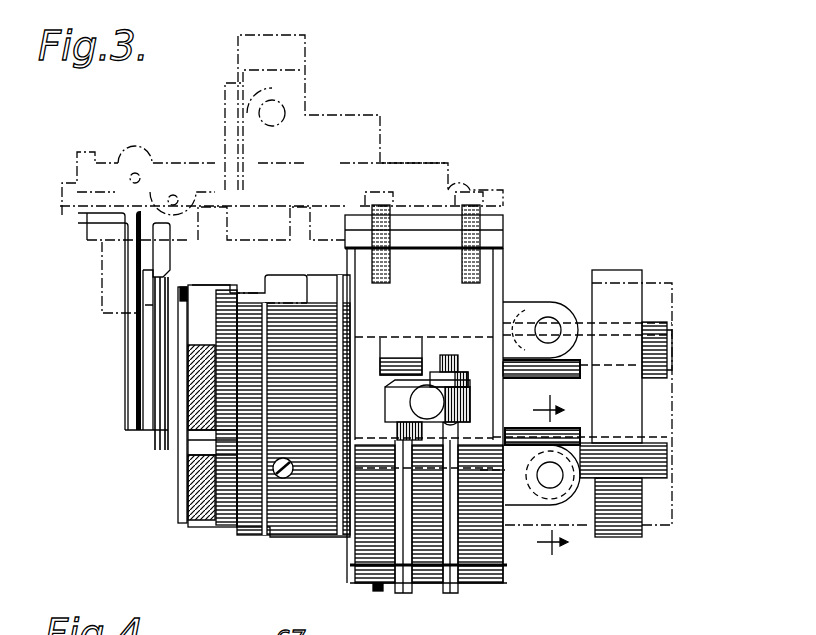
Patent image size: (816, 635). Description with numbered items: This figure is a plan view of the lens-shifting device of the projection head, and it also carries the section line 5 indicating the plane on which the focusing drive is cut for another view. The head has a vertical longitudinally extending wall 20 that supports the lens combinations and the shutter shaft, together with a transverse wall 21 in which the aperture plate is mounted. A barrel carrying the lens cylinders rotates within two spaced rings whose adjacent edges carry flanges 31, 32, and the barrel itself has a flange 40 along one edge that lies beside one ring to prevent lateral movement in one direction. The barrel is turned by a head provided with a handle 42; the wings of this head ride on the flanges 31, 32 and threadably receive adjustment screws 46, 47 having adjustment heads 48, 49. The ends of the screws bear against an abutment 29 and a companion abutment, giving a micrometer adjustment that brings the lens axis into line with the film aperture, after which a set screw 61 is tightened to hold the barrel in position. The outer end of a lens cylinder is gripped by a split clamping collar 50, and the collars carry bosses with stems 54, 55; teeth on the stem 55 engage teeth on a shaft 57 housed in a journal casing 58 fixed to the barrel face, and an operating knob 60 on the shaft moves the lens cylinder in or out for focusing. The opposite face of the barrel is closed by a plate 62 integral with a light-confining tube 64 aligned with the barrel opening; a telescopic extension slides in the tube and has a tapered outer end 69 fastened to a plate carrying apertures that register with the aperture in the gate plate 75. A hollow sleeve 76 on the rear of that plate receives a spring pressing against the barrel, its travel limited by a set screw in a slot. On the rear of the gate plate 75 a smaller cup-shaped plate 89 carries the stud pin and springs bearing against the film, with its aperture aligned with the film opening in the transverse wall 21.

The section line 5- 5 is at (558, 475).
The vertical longitudinally extending wall 20 is at (205, 197).
The transverse wall 21 is at (135, 296).
The abutment 29 is at (408, 356).
The flange 31 is at (406, 594).
The flange 32 is at (455, 598).
The flange 40 is at (505, 270).
The handle 42 is at (435, 336).
The adjustment screw 46 is at (386, 392).
The adjustment screw 47 is at (462, 428).
The adjustment head 48 is at (395, 430).
The adjustment head 49 is at (470, 355).
The clamping collar 50 is at (625, 285).
The stem 54 is at (668, 350).
The stem 55 is at (653, 479).
The shaft 57 is at (552, 326).
The journal casing 58 is at (520, 312).
The operating knob 60 is at (543, 500).
The set screw 61 is at (378, 592).
The plate 62 is at (395, 380).
The light-confining tube 64 is at (288, 276).
The tapered outer end 69 is at (188, 297).
The gate plate 75 is at (158, 340).
The sleeve 76 is at (200, 440).
The cup-shaped plate 89 is at (168, 278).